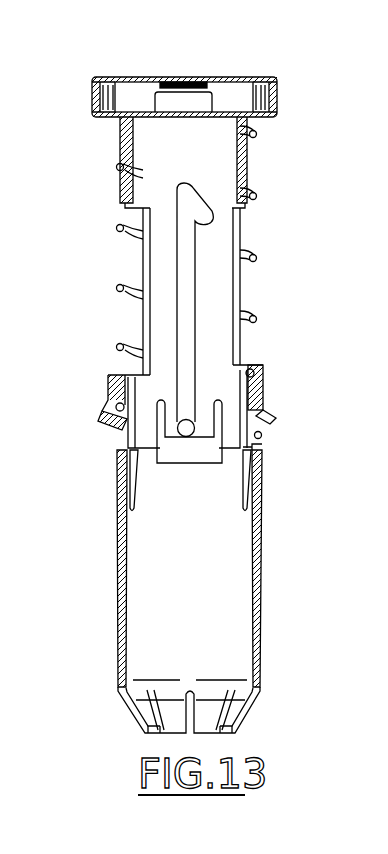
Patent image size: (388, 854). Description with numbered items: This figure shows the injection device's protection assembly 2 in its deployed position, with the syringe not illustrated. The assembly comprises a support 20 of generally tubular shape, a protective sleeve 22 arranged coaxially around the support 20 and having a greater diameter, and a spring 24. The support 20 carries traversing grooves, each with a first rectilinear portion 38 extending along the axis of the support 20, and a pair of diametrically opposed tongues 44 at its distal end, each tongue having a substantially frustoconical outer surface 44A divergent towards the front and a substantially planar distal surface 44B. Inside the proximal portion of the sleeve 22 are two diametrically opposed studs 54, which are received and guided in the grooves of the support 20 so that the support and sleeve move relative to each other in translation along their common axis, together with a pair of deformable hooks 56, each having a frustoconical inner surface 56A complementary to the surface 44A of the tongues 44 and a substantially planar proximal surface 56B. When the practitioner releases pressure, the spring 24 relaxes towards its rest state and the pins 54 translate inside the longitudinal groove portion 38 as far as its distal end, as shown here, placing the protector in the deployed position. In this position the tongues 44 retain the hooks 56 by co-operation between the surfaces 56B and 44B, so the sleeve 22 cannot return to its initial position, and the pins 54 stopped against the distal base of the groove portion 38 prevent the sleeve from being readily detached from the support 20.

The protection assembly 2 is at (105, 606).
The support 20 is at (120, 200).
The protective sleeve 22 is at (265, 573).
The spring 24 is at (256, 258).
The first rectilinear portion of groove 38 is at (197, 350).
The tongues 44 is at (106, 421).
The frustoconical outer surface 44A is at (108, 386).
The planar distal surface 44B is at (268, 430).
The studs 54 is at (183, 441).
The deformable hooks 56 is at (258, 463).
The frustoconical inner surface 56A is at (258, 504).
The planar proximal surface 56B is at (118, 450).